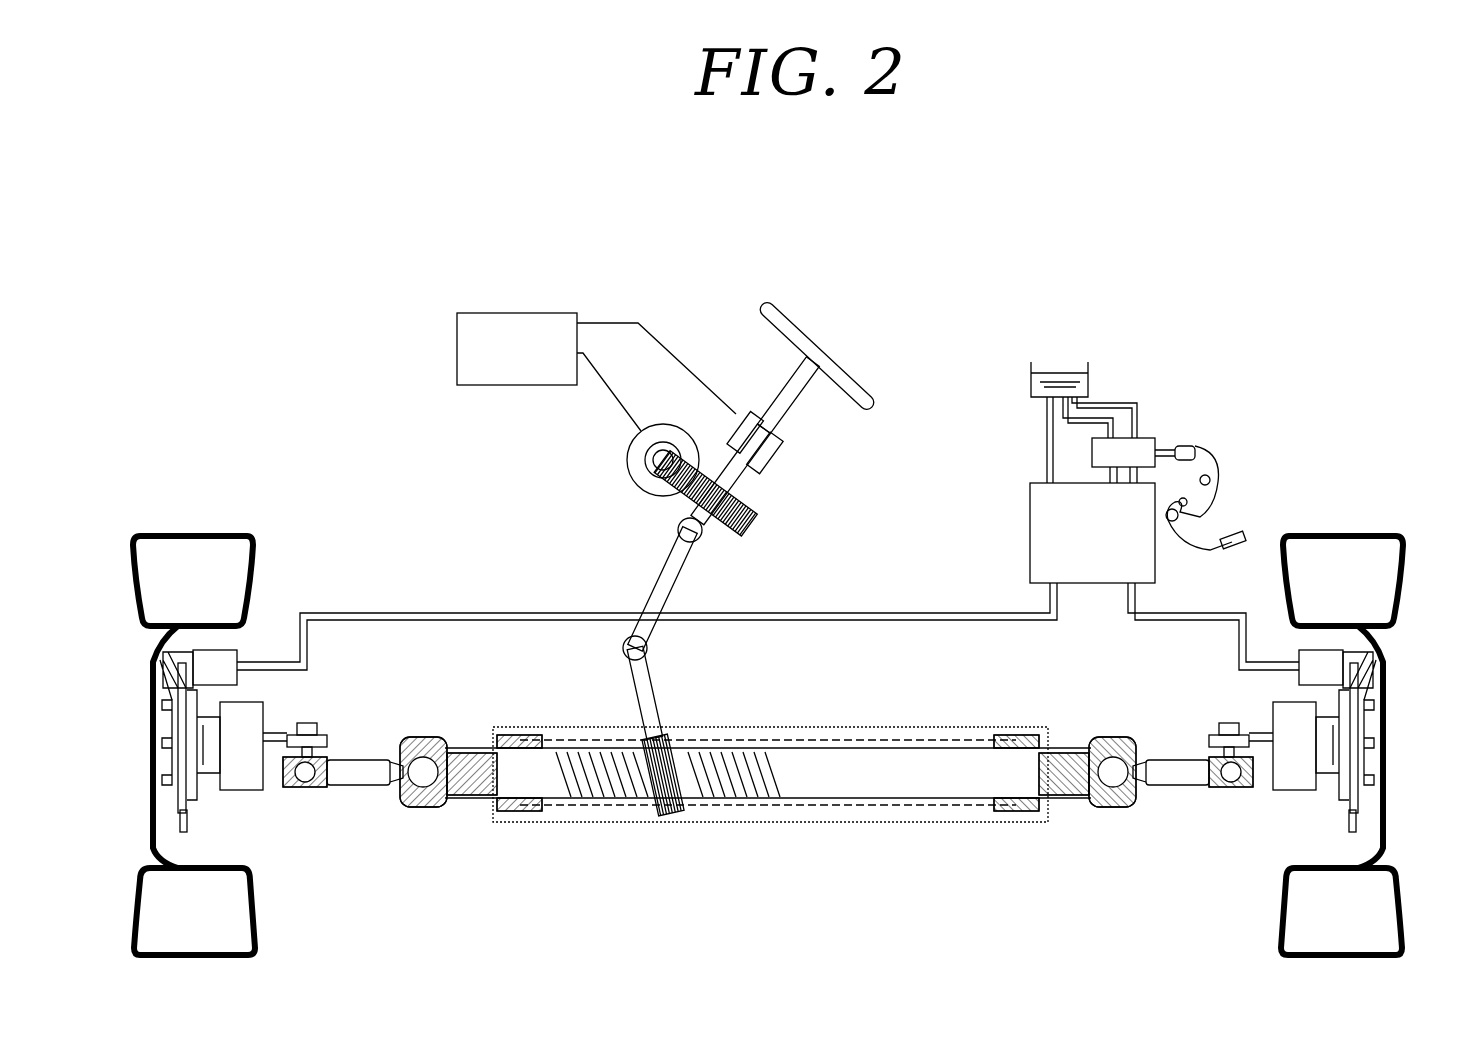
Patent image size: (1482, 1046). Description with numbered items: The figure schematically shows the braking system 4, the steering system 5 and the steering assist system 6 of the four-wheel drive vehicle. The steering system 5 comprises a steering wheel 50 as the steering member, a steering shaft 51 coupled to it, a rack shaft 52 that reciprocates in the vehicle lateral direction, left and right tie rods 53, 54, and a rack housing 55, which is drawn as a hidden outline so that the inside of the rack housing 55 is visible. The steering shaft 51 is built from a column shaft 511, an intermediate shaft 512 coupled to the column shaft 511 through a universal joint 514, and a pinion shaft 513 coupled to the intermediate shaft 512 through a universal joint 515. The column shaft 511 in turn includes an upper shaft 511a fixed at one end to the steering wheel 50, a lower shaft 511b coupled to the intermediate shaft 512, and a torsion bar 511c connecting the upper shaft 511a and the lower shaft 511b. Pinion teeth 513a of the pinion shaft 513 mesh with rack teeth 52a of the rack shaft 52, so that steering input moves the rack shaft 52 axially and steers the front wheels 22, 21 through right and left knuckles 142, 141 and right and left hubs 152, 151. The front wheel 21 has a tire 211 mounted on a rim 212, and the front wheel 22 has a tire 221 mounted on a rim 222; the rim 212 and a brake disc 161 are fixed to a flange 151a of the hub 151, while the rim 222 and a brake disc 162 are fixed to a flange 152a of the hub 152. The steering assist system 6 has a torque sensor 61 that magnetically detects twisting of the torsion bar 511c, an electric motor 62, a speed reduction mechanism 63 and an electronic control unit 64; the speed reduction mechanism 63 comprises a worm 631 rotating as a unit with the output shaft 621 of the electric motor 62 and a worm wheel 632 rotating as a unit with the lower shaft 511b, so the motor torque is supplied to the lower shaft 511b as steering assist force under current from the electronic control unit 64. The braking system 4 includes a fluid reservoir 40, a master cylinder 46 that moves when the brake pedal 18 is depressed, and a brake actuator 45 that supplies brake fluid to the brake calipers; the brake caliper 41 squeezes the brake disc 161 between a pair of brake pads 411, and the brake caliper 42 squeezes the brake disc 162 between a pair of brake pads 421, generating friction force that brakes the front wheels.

The braking system 4 is at (1024, 403).
The steering system 5 is at (839, 277).
The steering assist system 6 is at (455, 278).
The brake pedal 18 is at (1225, 532).
The left front wheel 21 is at (1366, 704).
The right front wheel 22 is at (174, 704).
The fluid reservoir 40 is at (1090, 378).
The brake caliper 41 is at (1296, 650).
The brake caliper 42 is at (240, 650).
The brake actuator 45 is at (1030, 510).
The master cylinder 46 is at (1140, 435).
The steering wheel 50 is at (866, 389).
The steering shaft 51 is at (746, 602).
The rack shaft 52 is at (768, 779).
The rack teeth 52a is at (712, 802).
The left tie rod 53 is at (1178, 750).
The right tie rod 54 is at (358, 748).
The rack housing 55 is at (928, 822).
The torque sensor 61 is at (744, 411).
The electric motor 62 is at (628, 481).
The speed reduction mechanism 63 is at (628, 495).
The electronic control unit 64 is at (455, 338).
The left knuckle 141 is at (1272, 712).
The right knuckle 142 is at (262, 717).
The left hub 151 is at (1369, 749).
The flange 151a is at (1366, 732).
The right hub 152 is at (163, 747).
The flange 152a is at (168, 725).
The brake disc 161 is at (1349, 822).
The brake disc 162 is at (187, 828).
The tire 211 is at (1352, 532).
The rim 212 is at (1378, 822).
The tire 221 is at (172, 532).
The rim 222 is at (163, 822).
The brake pads 411 is at (1376, 664).
The brake pads 421 is at (160, 664).
The column shaft 511 is at (880, 440).
The upper shaft 511a is at (782, 406).
The lower shaft 511b is at (742, 475).
The torsion bar 511c is at (778, 459).
The intermediate shaft 512 is at (681, 572).
The pinion shaft 513 is at (648, 650).
The pinion teeth 513a is at (668, 815).
The universal joint 514 is at (703, 537).
The universal joint 515 is at (623, 649).
The output shaft 621 is at (654, 463).
The worm 631 is at (657, 468).
The worm wheel 632 is at (700, 507).